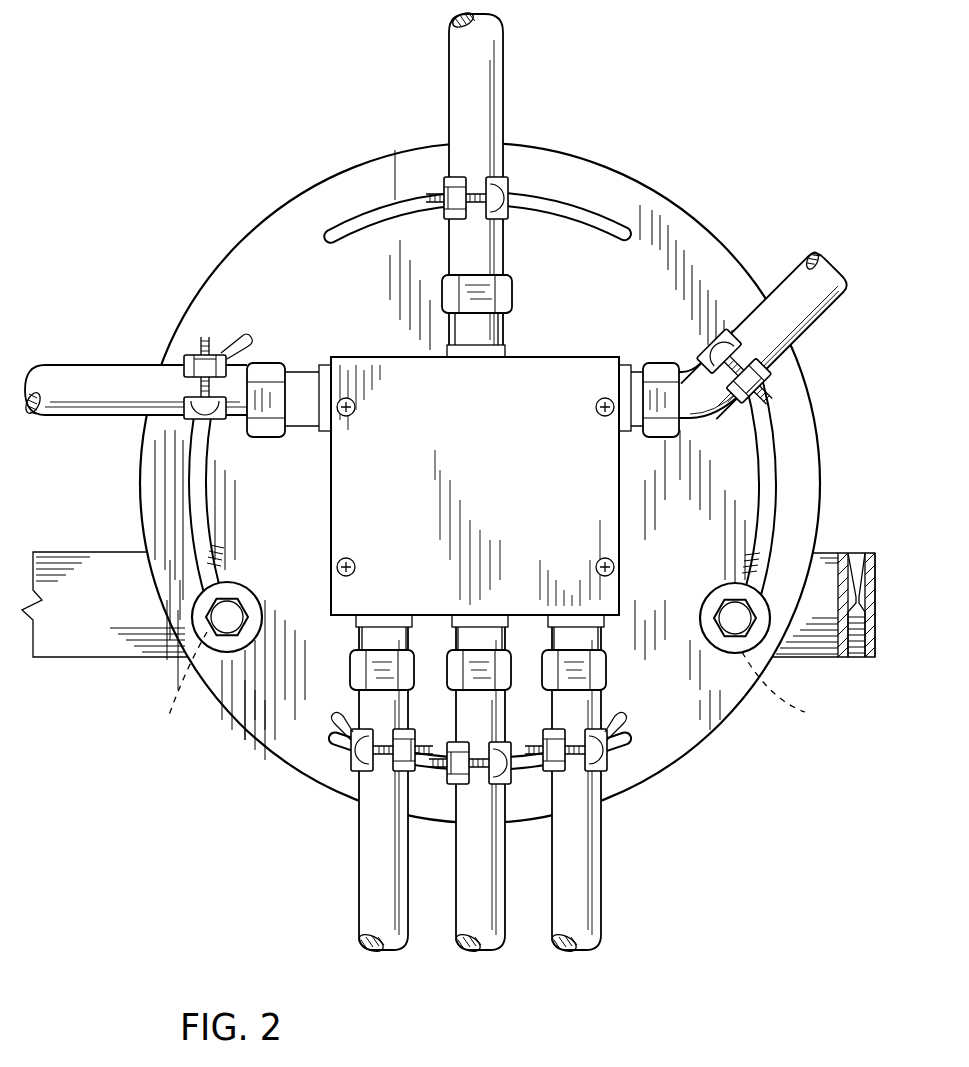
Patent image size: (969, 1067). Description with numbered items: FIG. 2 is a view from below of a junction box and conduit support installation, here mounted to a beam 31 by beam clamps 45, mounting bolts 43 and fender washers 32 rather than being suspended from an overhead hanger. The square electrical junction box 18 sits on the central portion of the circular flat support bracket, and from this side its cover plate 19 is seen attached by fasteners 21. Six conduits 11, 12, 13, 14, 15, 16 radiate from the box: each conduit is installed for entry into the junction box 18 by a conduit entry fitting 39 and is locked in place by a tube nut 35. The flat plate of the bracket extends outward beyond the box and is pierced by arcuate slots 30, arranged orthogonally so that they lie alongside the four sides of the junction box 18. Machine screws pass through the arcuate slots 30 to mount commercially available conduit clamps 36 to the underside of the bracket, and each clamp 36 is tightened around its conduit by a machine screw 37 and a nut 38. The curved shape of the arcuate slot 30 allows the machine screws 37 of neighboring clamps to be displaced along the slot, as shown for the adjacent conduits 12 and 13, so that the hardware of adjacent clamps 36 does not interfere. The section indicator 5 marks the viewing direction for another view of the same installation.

The section line of FIG. 5 is at (40, 197).
The conduit 11 is at (603, 920).
The conduit 12 is at (507, 920).
The conduit 13 is at (410, 920).
The conduit 14 is at (88, 416).
The conduit 15 is at (504, 78).
The conduit 16 is at (797, 300).
The junction box 18 is at (540, 357).
The cover plate 19 is at (465, 480).
The fasteners 21 is at (356, 407).
The arcuate slots 30 is at (578, 207).
The beam 31 is at (80, 658).
The fender washers 32 is at (481, 609).
The tube nuts 35 is at (265, 360).
The conduit clamps 36 is at (508, 195).
The machine screws 37 is at (500, 529).
The nuts 38 is at (205, 343).
The conduit entry fittings 39 is at (310, 370).
The mounting bolts 43 is at (245, 615).
The beam clamps 45 is at (493, 687).